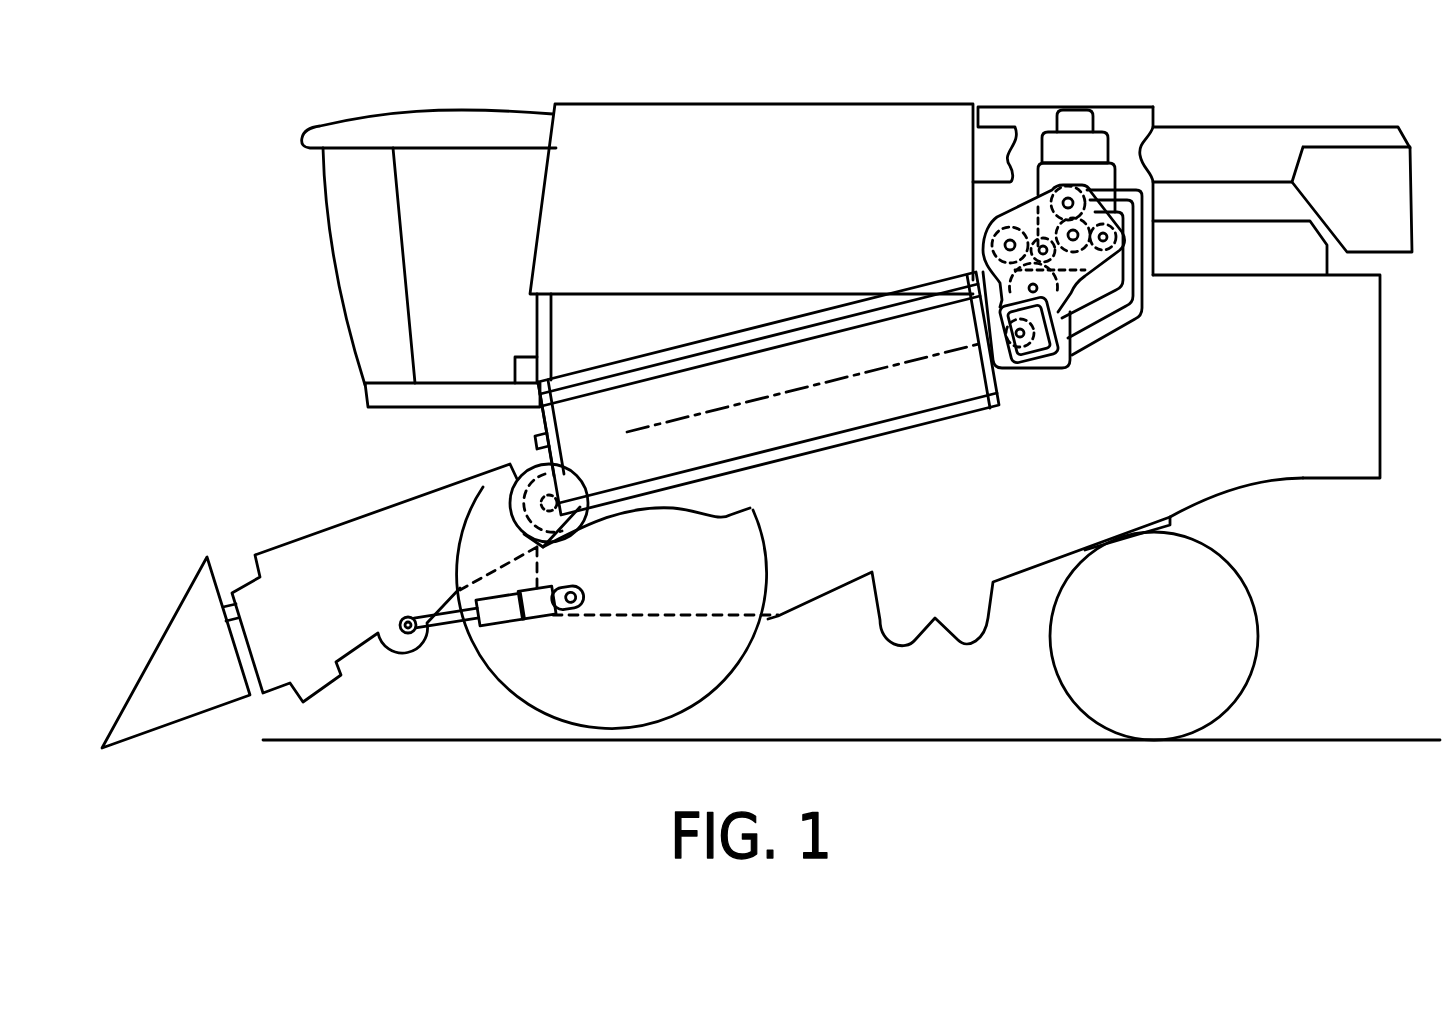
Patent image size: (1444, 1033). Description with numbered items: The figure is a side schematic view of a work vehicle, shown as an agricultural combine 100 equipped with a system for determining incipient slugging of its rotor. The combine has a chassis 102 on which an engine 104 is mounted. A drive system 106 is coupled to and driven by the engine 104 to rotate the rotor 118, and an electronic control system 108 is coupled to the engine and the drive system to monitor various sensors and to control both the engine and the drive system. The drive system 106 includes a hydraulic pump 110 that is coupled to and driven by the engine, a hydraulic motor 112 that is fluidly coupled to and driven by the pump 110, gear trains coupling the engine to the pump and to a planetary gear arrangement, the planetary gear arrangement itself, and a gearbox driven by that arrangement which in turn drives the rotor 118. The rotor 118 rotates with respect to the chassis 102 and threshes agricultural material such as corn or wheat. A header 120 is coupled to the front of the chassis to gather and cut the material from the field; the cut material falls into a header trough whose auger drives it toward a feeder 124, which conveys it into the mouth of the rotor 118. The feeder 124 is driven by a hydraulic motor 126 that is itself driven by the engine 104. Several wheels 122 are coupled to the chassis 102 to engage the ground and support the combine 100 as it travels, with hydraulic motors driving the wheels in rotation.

The agricultural combine 100 is at (784, 80).
The chassis 102 is at (853, 498).
The engine 104 is at (1077, 122).
The drive system 106 is at (1168, 318).
The electronic control system 108 is at (512, 367).
The hydraulic pump 110 is at (1084, 181).
The hydraulic motor 112 is at (1027, 367).
The rotor 118 is at (738, 350).
The header 120 is at (162, 630).
The wheels 122 is at (575, 668).
The feeder 124 is at (490, 482).
The hydraulic motor 126 is at (547, 466).